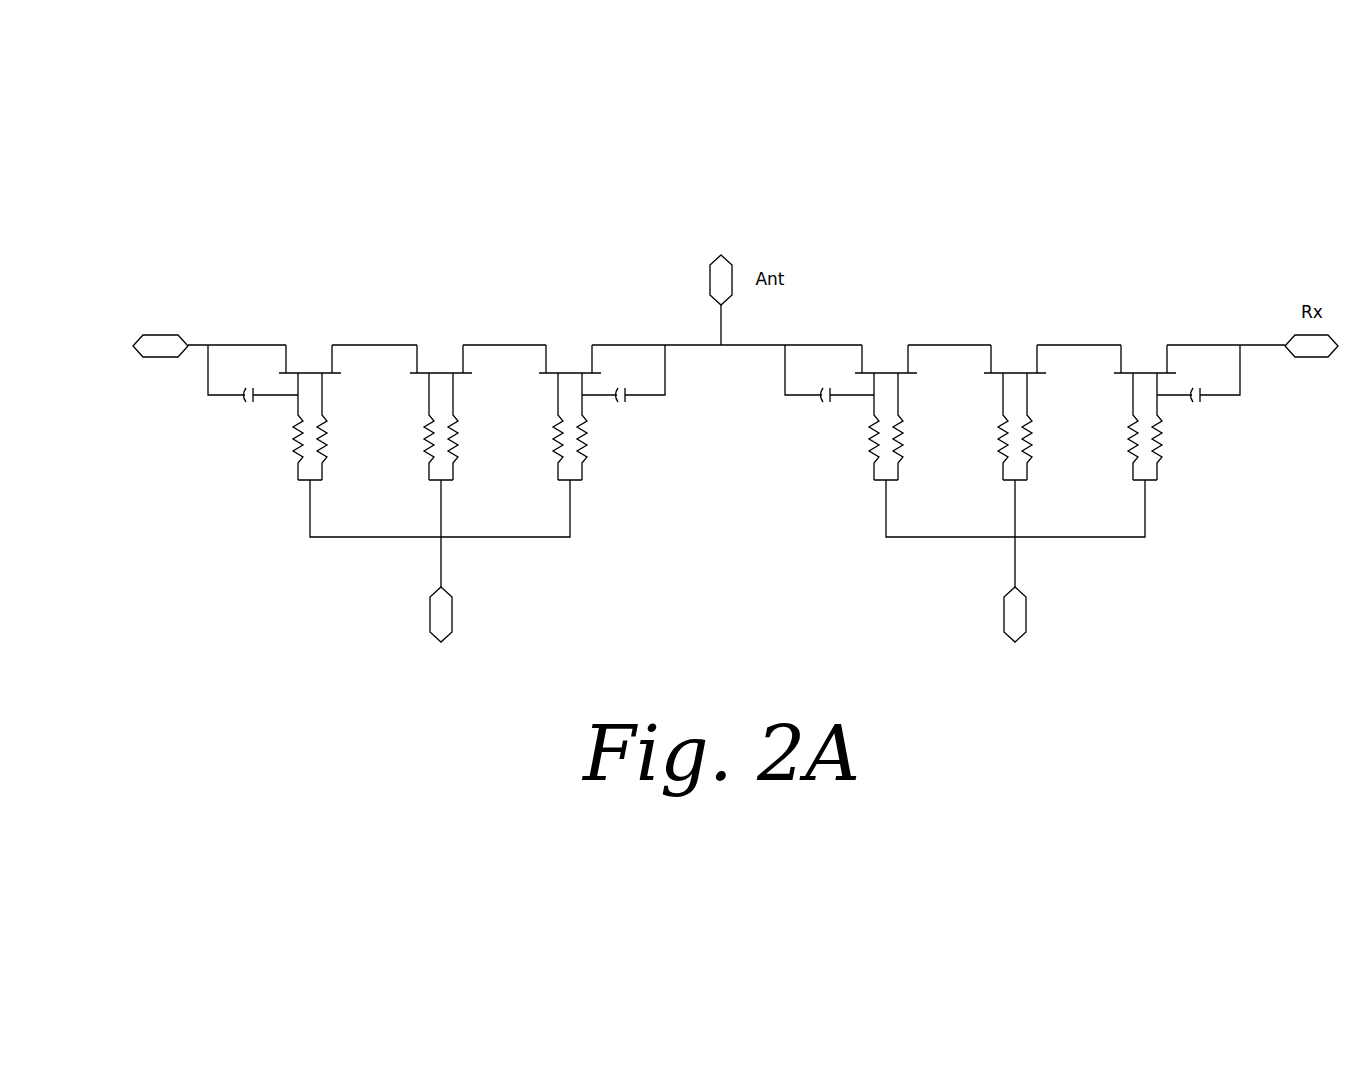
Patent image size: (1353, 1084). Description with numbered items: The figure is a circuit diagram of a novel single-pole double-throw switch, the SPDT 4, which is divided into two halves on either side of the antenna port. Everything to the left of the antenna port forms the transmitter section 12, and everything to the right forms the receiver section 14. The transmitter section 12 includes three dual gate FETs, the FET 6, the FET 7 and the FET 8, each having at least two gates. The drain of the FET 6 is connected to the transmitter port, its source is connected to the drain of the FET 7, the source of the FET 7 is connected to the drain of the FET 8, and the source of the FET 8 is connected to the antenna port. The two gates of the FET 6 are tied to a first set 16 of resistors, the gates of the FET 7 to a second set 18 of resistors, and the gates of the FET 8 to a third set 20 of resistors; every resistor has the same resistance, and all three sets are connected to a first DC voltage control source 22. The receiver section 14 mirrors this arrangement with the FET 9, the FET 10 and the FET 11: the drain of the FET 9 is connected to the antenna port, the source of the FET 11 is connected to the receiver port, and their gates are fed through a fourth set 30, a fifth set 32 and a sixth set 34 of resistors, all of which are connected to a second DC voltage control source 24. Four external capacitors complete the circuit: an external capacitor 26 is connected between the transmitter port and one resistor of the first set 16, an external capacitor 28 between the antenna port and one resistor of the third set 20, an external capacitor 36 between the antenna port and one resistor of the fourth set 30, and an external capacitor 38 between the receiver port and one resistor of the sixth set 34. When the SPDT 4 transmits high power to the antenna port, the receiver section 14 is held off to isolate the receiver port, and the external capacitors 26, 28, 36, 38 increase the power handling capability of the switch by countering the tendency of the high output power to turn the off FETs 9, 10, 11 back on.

The SPDT 4 is at (131, 277).
The transmitter section 12 is at (484, 242).
The receiver section 14 is at (1069, 259).
The FET 6 is at (315, 350).
The FET 7 is at (445, 350).
The FET 8 is at (575, 350).
The FET 9 is at (889, 350).
The FET 10 is at (1017, 350).
The FET 11 is at (1148, 350).
The first set of resistors 16 is at (288, 434).
The second set of resistors 18 is at (413, 437).
The third set of resistors 20 is at (546, 437).
The fourth set of resistors 30 is at (863, 434).
The fifth set of resistors 32 is at (988, 437).
The sixth set of resistors 34 is at (1118, 437).
The external capacitor 26 is at (254, 367).
The external capacitor 28 is at (637, 369).
The external capacitor 36 is at (827, 369).
The external capacitor 38 is at (1211, 369).
The first DC voltage control source 22 is at (409, 610).
The second DC voltage control source 24 is at (991, 610).